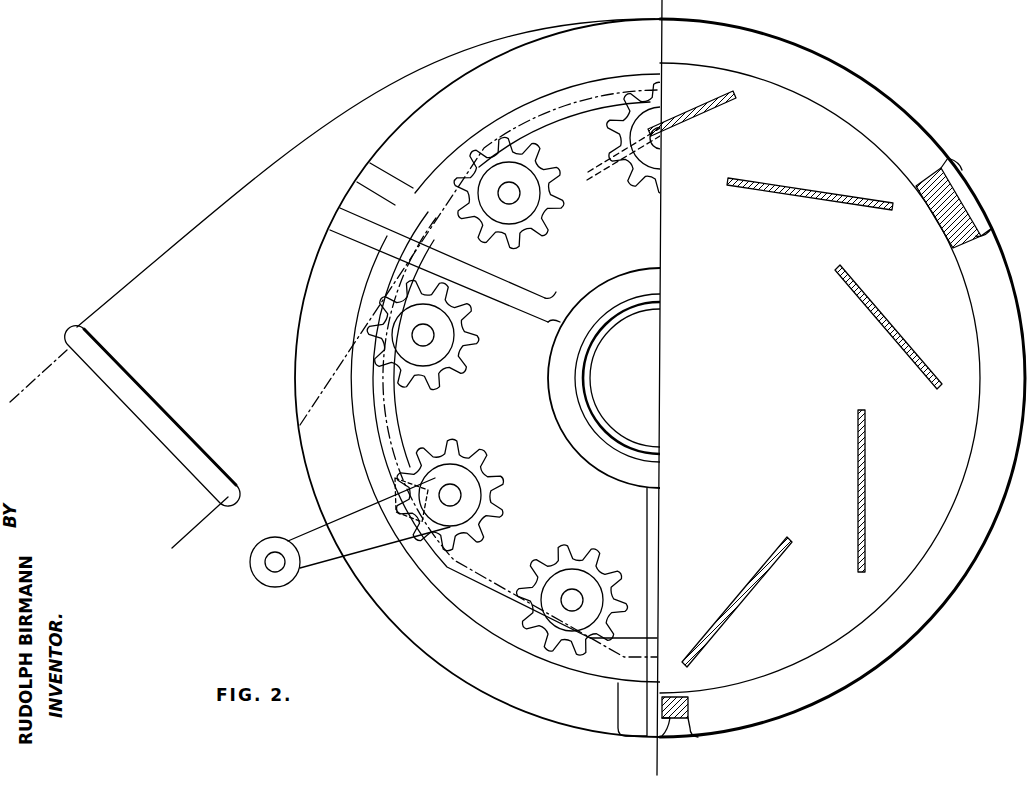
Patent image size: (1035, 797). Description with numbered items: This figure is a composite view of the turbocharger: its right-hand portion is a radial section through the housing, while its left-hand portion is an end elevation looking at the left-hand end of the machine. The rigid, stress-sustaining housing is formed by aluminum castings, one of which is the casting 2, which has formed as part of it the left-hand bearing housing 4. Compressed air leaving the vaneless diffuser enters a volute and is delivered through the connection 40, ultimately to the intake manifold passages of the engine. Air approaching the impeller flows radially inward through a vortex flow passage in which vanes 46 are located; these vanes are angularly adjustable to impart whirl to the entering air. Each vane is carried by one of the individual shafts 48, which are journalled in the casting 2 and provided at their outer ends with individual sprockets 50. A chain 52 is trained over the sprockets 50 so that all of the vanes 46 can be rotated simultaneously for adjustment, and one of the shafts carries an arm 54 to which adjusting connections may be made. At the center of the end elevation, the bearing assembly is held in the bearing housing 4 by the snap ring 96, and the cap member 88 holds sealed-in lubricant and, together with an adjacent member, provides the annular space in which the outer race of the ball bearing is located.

The aluminum casting 2 is at (882, 662).
The left-hand bearing housing 4 is at (608, 470).
The connection 40 is at (190, 235).
The vanes 46 is at (910, 398).
The shafts 48 is at (655, 133).
The sprockets 50 is at (637, 182).
The chain 52 is at (398, 405).
The arm 54 is at (318, 547).
The cap member 88 is at (645, 386).
The snap ring 96 is at (638, 448).